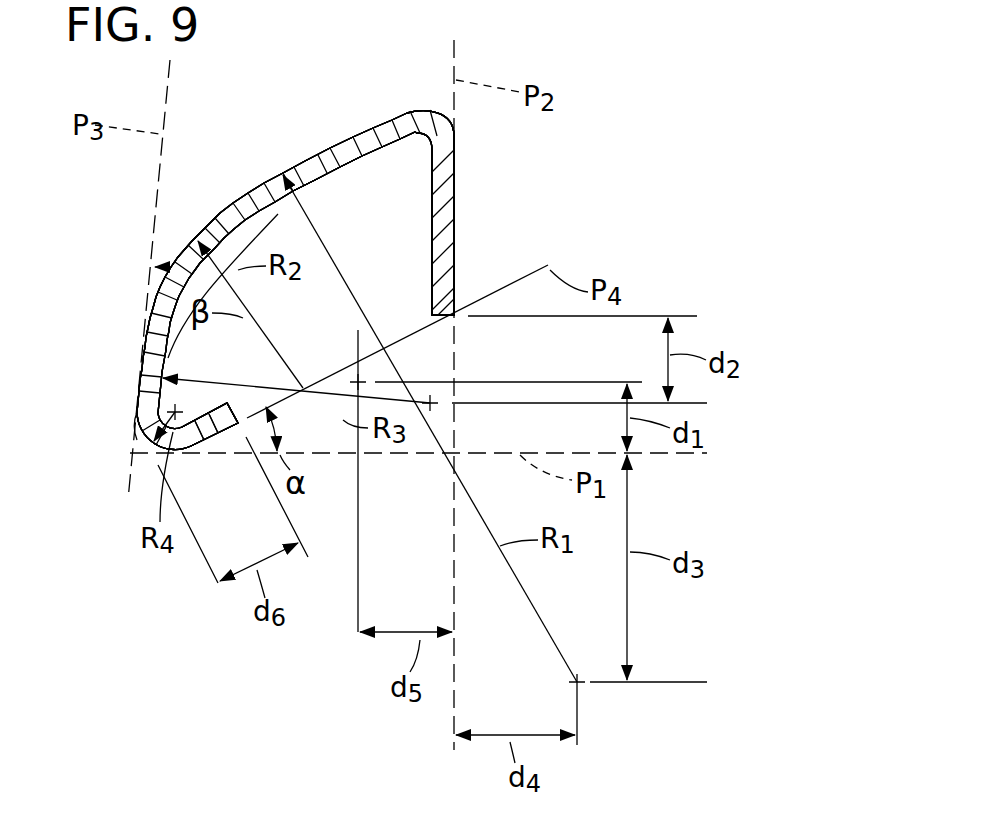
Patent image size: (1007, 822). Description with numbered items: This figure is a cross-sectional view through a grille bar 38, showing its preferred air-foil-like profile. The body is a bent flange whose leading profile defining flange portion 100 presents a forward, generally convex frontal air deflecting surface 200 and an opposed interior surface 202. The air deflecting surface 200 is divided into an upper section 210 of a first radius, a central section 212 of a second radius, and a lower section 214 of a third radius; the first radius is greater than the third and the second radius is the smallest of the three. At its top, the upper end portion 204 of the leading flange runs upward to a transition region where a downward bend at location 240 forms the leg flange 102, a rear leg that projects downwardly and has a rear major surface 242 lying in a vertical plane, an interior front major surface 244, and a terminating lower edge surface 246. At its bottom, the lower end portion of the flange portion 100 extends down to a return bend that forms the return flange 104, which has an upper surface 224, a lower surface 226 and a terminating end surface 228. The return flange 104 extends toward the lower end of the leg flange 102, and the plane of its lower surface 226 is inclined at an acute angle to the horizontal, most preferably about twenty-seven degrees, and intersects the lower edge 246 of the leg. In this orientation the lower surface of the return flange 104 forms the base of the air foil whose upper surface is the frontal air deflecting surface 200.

The grille bar 38 is at (363, 128).
The leading profile defining flange portion 100 is at (297, 166).
The leg flange 102 is at (453, 192).
The return flange 104 is at (206, 440).
The frontal air deflecting surface 200 is at (224, 211).
The interior surface 202 is at (280, 213).
The upper end portion 204 is at (416, 112).
The upper section 210 is at (352, 135).
The central section 212 is at (203, 226).
The lower section 214 is at (145, 382).
The upper surface 224 is at (203, 416).
The lower surface 226 is at (239, 426).
The end surface 228 is at (304, 384).
The bend location 240 is at (440, 110).
The rear major surface 242 is at (453, 215).
The front major surface 244 is at (428, 290).
The lower edge surface 246 is at (446, 320).